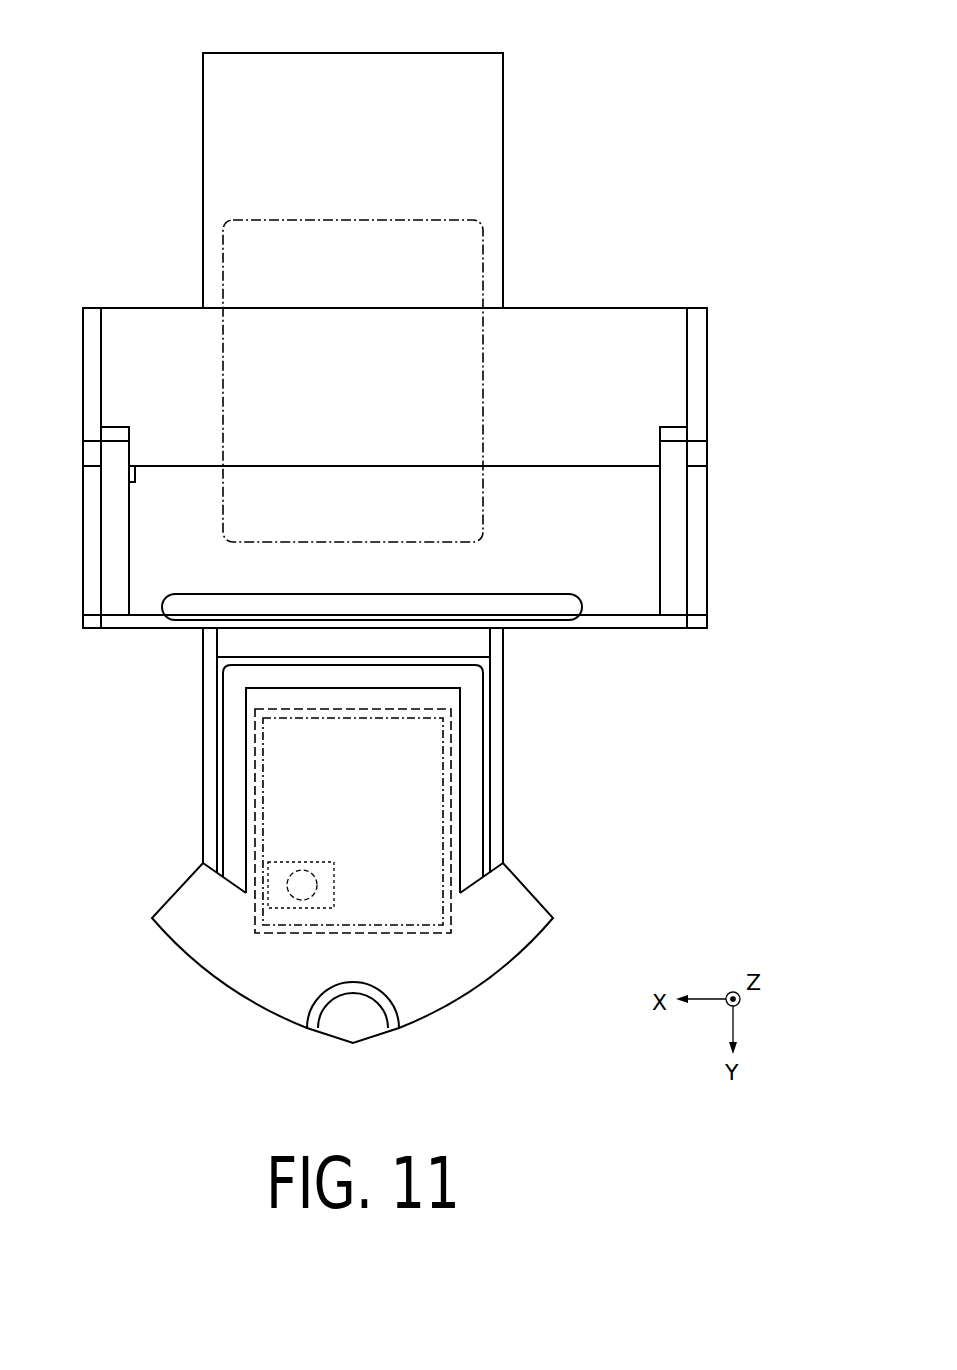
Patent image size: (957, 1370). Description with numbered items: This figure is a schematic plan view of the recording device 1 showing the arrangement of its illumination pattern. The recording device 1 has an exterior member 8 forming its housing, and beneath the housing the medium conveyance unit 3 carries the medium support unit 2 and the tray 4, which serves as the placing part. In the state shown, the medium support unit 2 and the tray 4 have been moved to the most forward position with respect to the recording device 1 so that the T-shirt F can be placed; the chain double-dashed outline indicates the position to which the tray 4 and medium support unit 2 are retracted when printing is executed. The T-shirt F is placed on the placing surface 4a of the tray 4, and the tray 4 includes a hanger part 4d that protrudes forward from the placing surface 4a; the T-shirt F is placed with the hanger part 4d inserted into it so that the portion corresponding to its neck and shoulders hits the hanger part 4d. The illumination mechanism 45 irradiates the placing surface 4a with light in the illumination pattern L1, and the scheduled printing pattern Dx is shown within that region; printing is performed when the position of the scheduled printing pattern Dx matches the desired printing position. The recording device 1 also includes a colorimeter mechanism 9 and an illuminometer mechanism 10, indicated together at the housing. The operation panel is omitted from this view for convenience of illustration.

The recording device 1 is at (411, 562).
The medium support unit 2 is at (490, 752).
The medium conveyance unit 3 is at (503, 703).
The tray 4 is at (317, 220).
The placing surface 4a is at (468, 835).
The hanger part 4d is at (334, 1038).
The exterior member 8 is at (630, 527).
The colorimeter mechanism 9 is at (341, 658).
The illuminometer mechanism 10 is at (338, 645).
The illumination mechanism 45 is at (188, 817).
The illumination pattern L1 is at (263, 768).
The scheduled printing pattern Dx is at (283, 885).
The T-shirt F is at (215, 948).